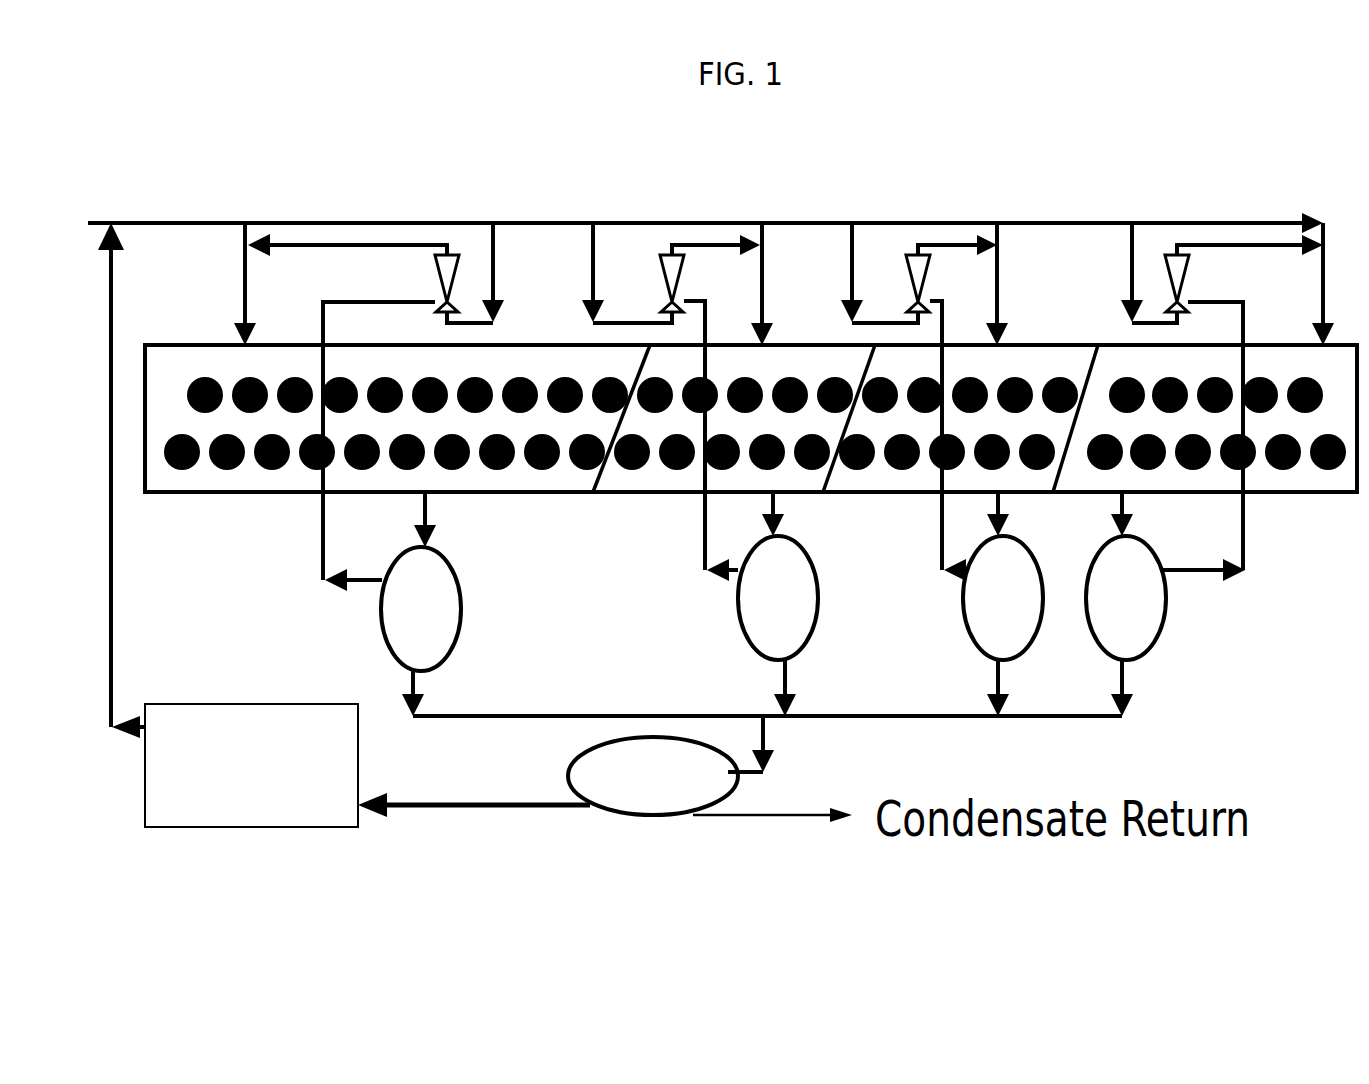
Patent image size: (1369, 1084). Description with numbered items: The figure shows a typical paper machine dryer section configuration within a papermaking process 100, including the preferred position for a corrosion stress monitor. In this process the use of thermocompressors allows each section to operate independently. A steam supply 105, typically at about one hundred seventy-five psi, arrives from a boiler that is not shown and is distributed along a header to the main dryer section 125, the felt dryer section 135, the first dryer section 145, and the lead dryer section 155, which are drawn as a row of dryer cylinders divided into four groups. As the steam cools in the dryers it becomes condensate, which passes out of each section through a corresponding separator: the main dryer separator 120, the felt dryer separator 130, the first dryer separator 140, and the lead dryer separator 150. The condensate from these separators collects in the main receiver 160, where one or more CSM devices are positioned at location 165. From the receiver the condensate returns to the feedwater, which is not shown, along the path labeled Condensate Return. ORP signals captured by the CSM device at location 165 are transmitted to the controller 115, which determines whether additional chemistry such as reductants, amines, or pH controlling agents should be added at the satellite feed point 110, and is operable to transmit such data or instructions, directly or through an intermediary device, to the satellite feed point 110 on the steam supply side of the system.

The papermaking process 100 is at (1226, 160).
The steam supply 105 is at (185, 220).
The satellite feed point 110 is at (102, 230).
The controller 115 is at (235, 827).
The main dryer separator 120 is at (460, 605).
The main dryer section 125 is at (235, 495).
The felt dryer separator 130 is at (808, 643).
The felt dryer section 135 is at (660, 495).
The first dryer separator 140 is at (967, 630).
The first dryer section 145 is at (893, 495).
The lead dryer separator 150 is at (1162, 633).
The lead dryer section 155 is at (1340, 495).
The main receiver 160 is at (633, 817).
The location 165 is at (588, 810).